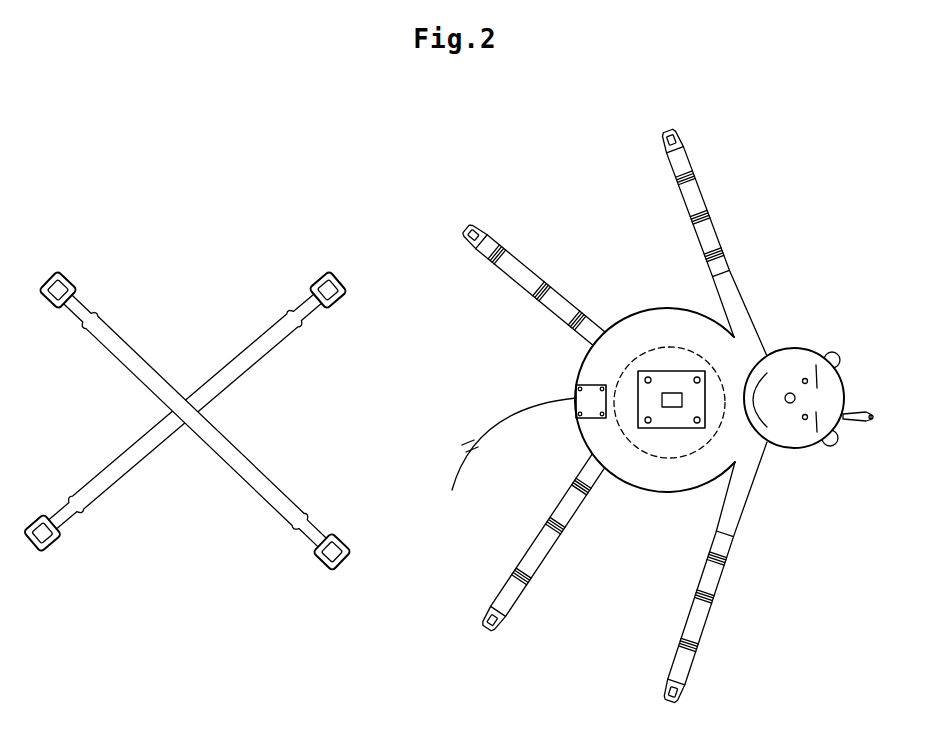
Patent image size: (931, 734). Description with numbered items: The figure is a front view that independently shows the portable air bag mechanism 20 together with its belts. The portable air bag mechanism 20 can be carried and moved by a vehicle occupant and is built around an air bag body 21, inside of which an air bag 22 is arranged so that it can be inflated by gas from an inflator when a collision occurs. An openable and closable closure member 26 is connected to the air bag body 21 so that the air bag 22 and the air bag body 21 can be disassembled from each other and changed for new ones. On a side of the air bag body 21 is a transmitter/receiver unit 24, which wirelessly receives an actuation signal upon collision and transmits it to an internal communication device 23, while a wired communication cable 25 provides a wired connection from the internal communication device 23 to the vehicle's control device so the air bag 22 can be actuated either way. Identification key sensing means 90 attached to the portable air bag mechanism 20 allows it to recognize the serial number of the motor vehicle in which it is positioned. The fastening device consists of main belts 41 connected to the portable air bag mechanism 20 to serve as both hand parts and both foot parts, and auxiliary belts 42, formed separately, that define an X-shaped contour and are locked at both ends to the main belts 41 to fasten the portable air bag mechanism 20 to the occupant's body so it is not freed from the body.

The portable air bag mechanism 20 is at (658, 416).
The air bag body 21 is at (765, 462).
The air bag 22 is at (692, 445).
The internal communication device 23 is at (592, 410).
The transmitter/receiver unit 24 is at (873, 420).
The wired communication cable 25 is at (490, 423).
The closure member 26 is at (675, 386).
The main belts 41 is at (483, 260).
The auxiliary belts 42 is at (260, 351).
The identification key sensing means 90 is at (676, 413).